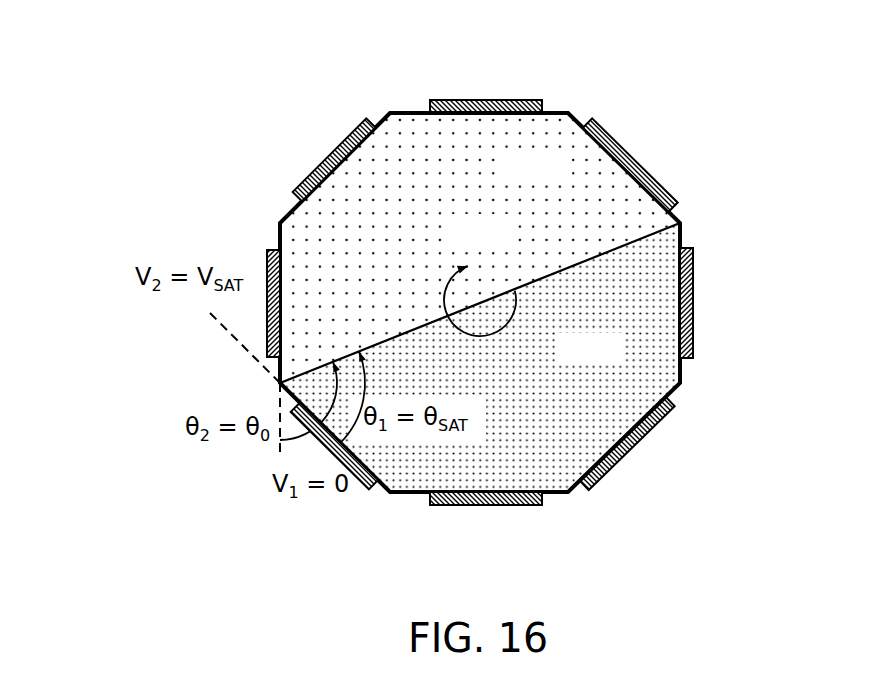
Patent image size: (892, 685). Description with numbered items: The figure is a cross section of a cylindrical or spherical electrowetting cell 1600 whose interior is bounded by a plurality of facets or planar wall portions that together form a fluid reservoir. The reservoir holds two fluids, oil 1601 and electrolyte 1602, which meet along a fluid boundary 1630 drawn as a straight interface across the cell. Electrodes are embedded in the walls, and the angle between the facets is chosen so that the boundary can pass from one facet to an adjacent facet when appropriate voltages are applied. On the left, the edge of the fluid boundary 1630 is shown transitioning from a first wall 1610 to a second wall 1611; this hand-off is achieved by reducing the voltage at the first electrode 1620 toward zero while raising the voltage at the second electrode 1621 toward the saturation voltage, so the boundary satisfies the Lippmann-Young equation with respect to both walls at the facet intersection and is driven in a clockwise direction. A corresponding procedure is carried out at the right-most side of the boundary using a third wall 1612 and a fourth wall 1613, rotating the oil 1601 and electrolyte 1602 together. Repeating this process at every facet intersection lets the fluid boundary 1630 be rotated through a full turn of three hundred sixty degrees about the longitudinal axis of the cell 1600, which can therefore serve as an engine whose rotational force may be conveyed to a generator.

The cell 1600 is at (216, 114).
The oil 1601 is at (504, 240).
The electrolyte 1602 is at (616, 358).
The first wall 1610 is at (392, 493).
The second wall 1611 is at (279, 232).
The third wall 1612 is at (668, 203).
The fourth wall 1613 is at (683, 229).
The first electrode 1620 is at (366, 486).
The second electrode 1621 is at (265, 262).
The fluid boundary 1630 is at (613, 250).